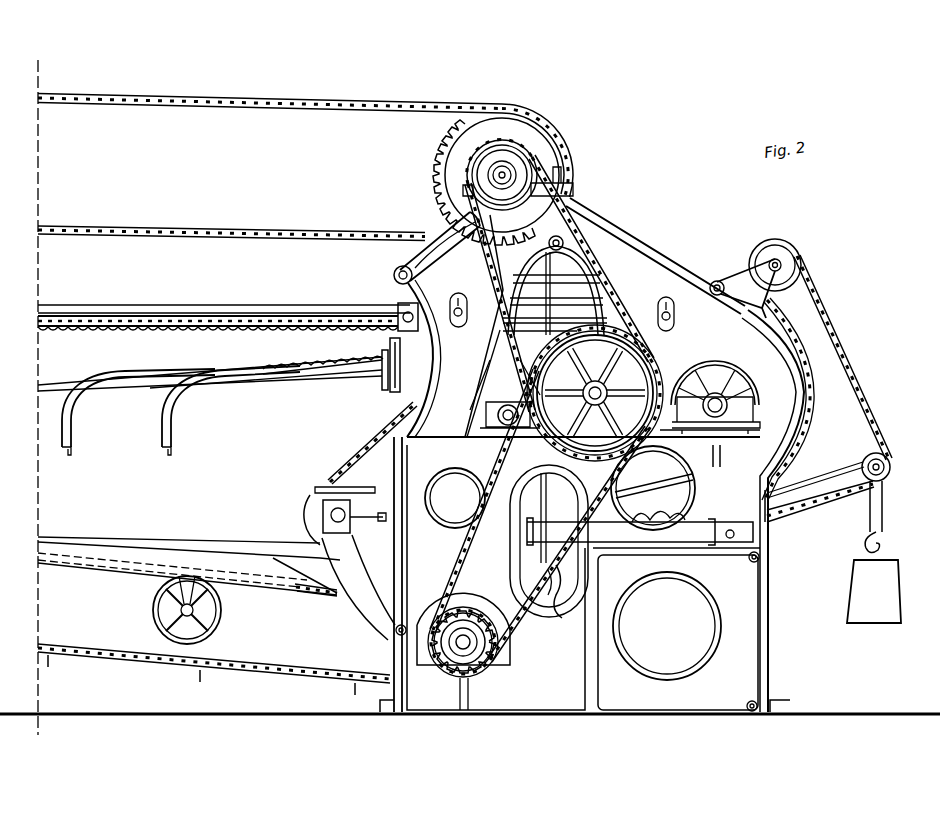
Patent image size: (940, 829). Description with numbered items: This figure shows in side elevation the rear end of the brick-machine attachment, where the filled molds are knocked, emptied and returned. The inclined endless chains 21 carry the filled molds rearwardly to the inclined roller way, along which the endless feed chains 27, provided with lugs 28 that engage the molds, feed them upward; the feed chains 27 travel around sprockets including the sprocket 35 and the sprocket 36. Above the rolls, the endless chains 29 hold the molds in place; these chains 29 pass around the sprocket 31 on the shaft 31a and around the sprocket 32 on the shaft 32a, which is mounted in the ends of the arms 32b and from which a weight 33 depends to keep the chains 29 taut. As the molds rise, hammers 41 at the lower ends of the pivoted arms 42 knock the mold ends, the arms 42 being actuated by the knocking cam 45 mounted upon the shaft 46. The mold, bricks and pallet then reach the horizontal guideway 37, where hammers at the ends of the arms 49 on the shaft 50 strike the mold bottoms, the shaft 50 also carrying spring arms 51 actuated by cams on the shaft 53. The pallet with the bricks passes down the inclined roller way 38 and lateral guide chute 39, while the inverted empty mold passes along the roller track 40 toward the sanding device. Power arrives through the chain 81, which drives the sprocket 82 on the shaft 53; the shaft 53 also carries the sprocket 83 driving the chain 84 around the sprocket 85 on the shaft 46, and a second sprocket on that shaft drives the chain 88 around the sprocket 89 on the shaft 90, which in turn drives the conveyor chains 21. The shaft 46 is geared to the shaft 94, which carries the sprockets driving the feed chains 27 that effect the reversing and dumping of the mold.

The endless chain 21 is at (245, 672).
The endless feed chain 27 is at (348, 474).
The lug 28 is at (392, 428).
The endless chain 29 is at (792, 432).
The sprocket 31 is at (802, 264).
The shaft 31a is at (780, 258).
The sprocket 32 is at (892, 460).
The shaft 32a is at (870, 460).
The arm 32b is at (834, 480).
The weight 33 is at (874, 552).
The sprocket 35 is at (482, 356).
The sprocket 36 is at (365, 490).
The horizontal guideway 37 is at (555, 320).
The inclined roller way 38 is at (340, 362).
The lateral guide chute 39 is at (158, 436).
The roller track 40 is at (346, 307).
The hammer 41 is at (555, 520).
The arm 42 is at (551, 320).
The knocking cam 45 is at (655, 358).
The shaft 46 is at (590, 396).
The arm 49 is at (562, 282).
The shaft 50 is at (393, 273).
The spring arm 51 is at (440, 238).
The shaft 53 is at (502, 170).
The chain 81 is at (352, 100).
The sprocket 82 is at (447, 165).
The sprocket 83 is at (500, 202).
The chain 84 is at (586, 250).
The sprocket 85 is at (545, 445).
The chain 88 is at (561, 604).
The sprocket 89 is at (478, 606).
The shaft 90 is at (495, 668).
The shaft 94 is at (735, 440).